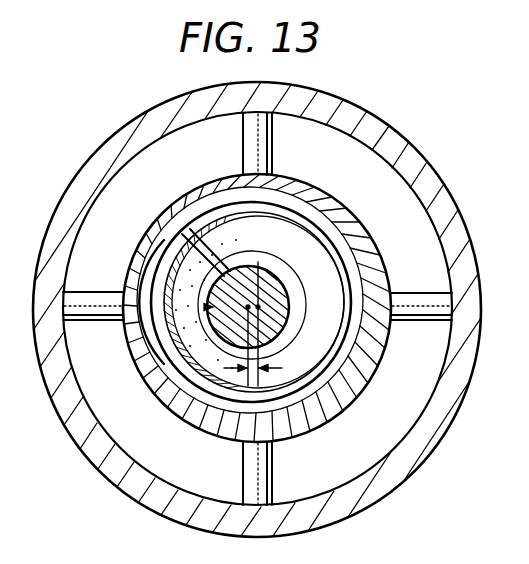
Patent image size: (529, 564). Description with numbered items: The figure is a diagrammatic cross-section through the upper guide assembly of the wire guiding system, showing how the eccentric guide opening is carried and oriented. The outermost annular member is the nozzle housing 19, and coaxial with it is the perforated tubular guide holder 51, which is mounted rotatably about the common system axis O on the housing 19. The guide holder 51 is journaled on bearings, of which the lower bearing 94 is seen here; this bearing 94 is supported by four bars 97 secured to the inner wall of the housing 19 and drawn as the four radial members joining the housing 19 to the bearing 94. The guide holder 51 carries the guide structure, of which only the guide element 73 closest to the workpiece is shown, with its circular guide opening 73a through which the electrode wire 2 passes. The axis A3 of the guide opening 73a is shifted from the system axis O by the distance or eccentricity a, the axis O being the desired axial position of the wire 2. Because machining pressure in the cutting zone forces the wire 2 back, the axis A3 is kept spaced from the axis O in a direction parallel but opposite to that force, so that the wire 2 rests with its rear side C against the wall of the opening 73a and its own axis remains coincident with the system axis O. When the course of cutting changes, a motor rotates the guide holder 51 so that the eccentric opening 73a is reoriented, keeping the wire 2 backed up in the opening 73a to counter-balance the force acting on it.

The nozzle housing 19 is at (474, 371).
The bars 97 is at (406, 291).
The lower bearing 94 is at (371, 250).
The tubular guide holder 51 is at (338, 223).
The guide element 73 is at (333, 323).
The guide opening 73a is at (306, 287).
The electrode wire 2 is at (221, 331).
The axis of the guide opening A3 is at (257, 264).
The system axis O is at (247, 305).
The eccentricity a is at (253, 385).
The rear side of the wire C is at (207, 308).